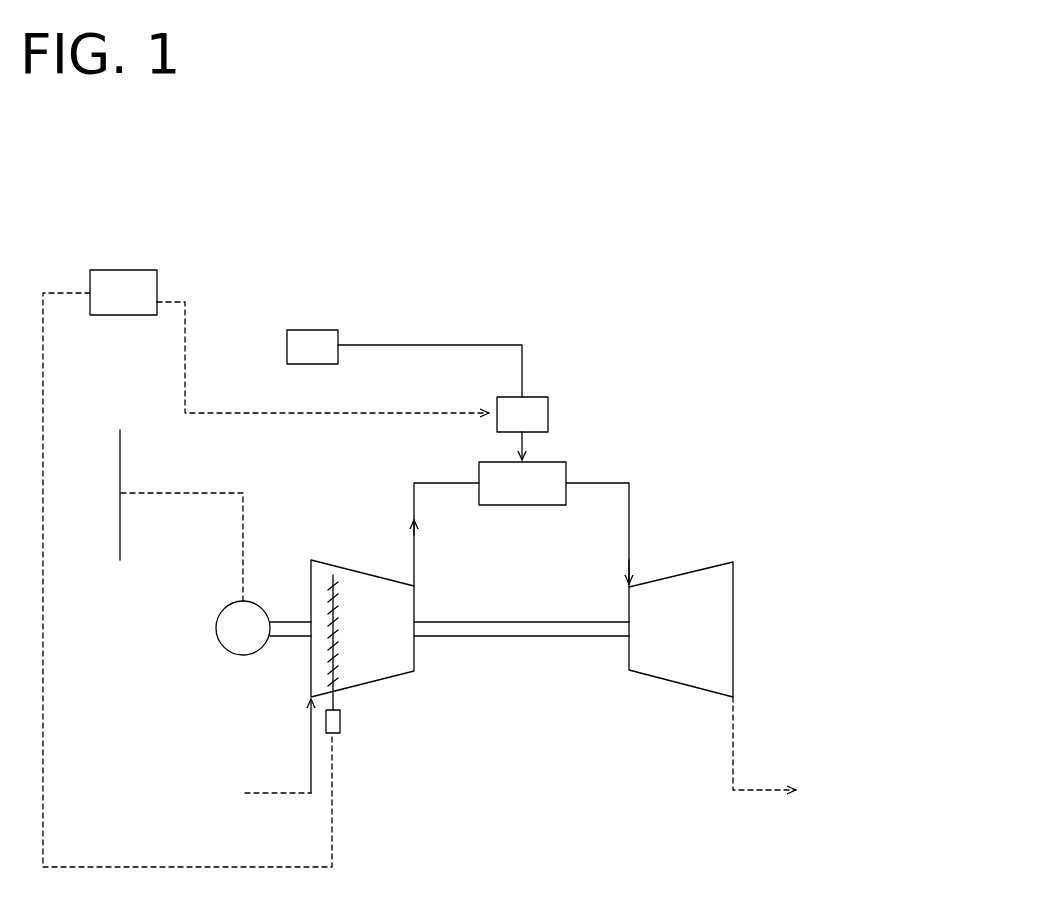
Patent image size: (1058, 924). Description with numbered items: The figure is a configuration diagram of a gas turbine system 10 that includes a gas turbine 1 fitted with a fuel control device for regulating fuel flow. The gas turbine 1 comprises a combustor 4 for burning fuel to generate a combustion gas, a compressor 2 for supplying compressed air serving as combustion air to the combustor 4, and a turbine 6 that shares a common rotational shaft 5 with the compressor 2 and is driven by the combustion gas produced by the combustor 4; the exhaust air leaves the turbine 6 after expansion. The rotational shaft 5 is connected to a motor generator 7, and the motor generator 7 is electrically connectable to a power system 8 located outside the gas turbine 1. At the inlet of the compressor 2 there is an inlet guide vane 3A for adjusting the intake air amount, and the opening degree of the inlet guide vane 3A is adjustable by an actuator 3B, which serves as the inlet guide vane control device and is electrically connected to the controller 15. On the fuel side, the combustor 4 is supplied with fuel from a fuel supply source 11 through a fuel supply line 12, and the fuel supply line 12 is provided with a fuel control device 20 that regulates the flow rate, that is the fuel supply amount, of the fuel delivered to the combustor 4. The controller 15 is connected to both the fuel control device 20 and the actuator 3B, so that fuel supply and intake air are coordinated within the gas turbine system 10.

The gas turbine 1 is at (632, 420).
The compressor 2 is at (378, 575).
The inlet guide vane 3A is at (334, 580).
The actuator 3B is at (341, 720).
The combustor 4 is at (551, 461).
The rotational shaft 5 is at (525, 637).
The turbine 6 is at (680, 574).
The motor generator 7 is at (248, 655).
The power system 8 is at (121, 445).
The gas turbine system 10 is at (229, 226).
The fuel supply source 11 is at (286, 347).
The fuel supply line 12 is at (416, 347).
The controller 15 is at (122, 316).
The fuel control device 20 is at (540, 398).